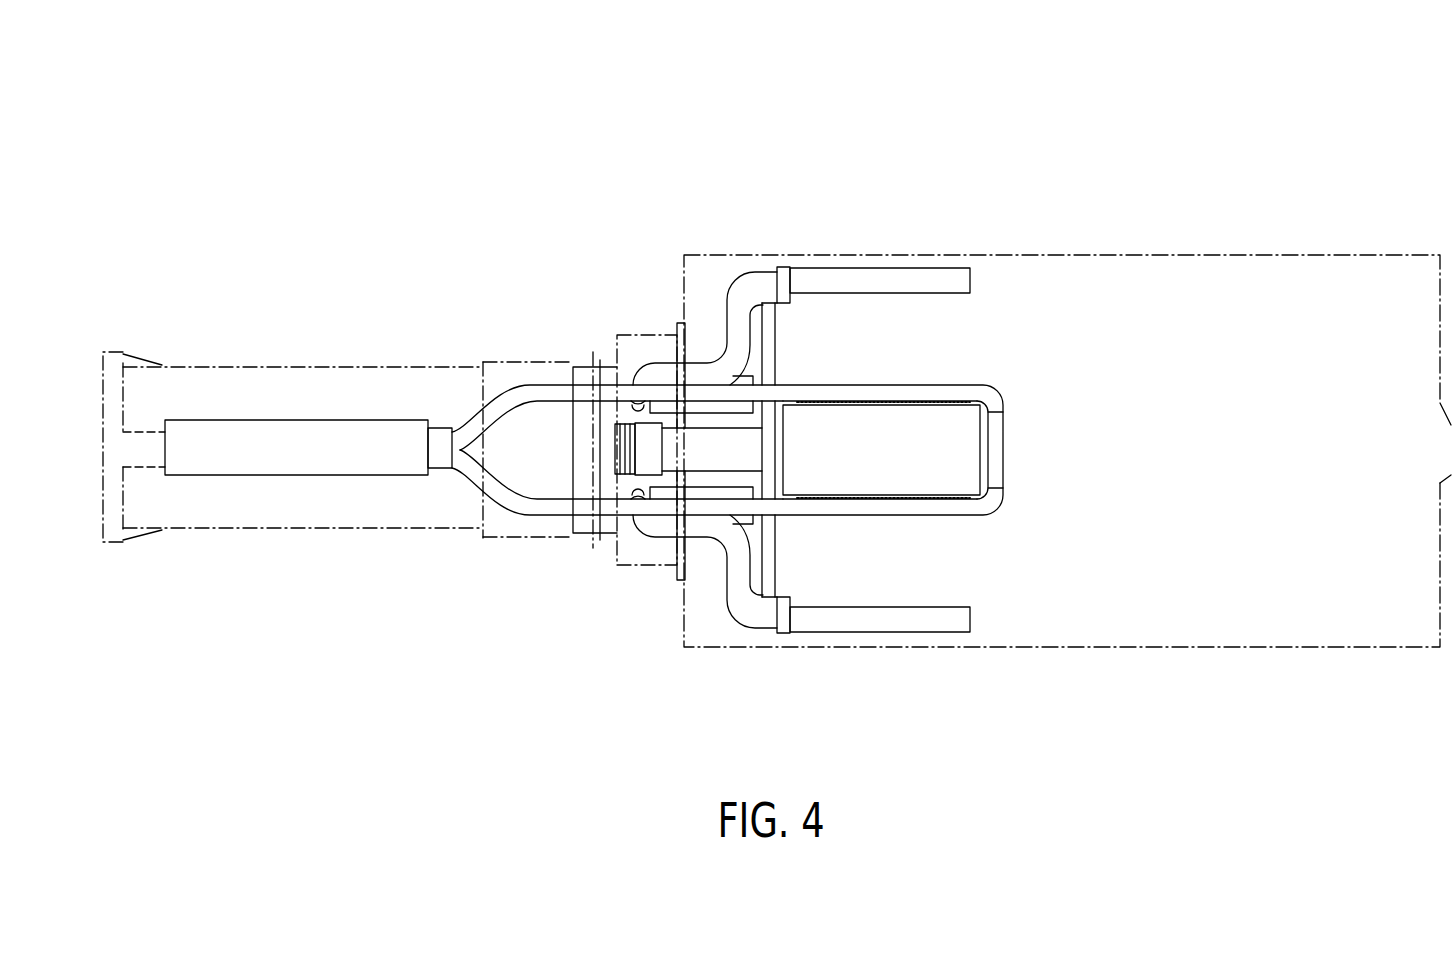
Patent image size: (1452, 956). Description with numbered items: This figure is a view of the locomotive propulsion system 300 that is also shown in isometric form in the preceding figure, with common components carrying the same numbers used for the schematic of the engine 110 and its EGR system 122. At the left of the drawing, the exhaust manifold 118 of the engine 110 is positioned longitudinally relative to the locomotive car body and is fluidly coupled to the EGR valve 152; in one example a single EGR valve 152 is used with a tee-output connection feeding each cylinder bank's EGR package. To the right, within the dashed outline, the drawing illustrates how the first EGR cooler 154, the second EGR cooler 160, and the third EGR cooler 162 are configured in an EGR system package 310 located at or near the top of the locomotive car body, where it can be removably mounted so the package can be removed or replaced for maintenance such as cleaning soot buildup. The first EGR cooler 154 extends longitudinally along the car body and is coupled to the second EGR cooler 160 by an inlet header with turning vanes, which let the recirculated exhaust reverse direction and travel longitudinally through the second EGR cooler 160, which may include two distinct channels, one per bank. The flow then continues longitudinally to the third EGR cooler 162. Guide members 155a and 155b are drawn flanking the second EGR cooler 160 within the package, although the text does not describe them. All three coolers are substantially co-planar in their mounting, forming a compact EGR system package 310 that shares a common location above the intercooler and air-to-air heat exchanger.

The locomotive propulsion system 300 is at (240, 118).
The engine 110 is at (1243, 195).
The exhaust manifold 118 is at (302, 430).
The EGR valve 152 is at (440, 433).
The third EGR cooler 162 is at (671, 437).
The first EGR cooler 154 is at (597, 505).
The first guide rail 155a is at (907, 393).
The second guide rail 155b is at (885, 507).
The second EGR cooler 160 is at (968, 450).
The EGR system 122 is at (1094, 454).
The EGR system package 310 is at (1010, 690).